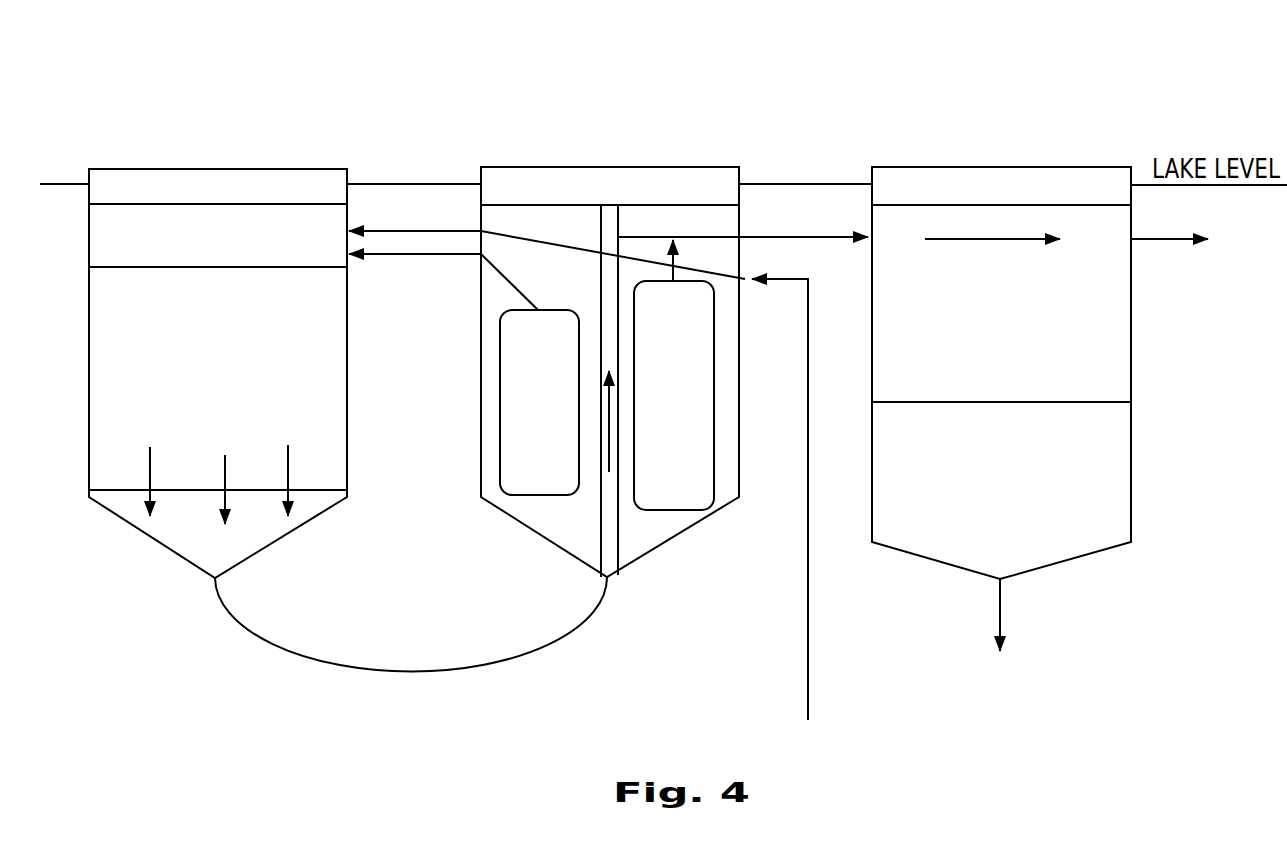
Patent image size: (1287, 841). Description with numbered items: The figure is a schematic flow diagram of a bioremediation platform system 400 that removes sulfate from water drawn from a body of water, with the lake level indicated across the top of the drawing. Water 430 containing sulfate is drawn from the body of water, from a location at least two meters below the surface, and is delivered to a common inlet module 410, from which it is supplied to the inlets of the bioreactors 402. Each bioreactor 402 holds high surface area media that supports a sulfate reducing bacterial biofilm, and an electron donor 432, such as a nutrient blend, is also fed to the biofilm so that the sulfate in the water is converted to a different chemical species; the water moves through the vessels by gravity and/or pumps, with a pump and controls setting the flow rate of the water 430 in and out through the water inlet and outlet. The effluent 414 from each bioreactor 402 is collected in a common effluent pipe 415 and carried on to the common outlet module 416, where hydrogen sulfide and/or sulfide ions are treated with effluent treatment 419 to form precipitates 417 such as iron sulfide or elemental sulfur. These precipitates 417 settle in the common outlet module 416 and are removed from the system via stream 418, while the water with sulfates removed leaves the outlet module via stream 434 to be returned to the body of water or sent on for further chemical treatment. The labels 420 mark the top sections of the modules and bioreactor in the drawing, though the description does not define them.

The bioremediation platform system 400 is at (898, 152).
The bioreactor 402 is at (238, 372).
The common inlet module 410 is at (651, 542).
The effluent 414 is at (412, 672).
The common effluent pipe 415 is at (613, 532).
The common outlet module 416 is at (1022, 305).
The precipitates 417 is at (1022, 497).
The stream 418 is at (1000, 600).
The effluent treatment 419 is at (718, 505).
The tank cover 420 is at (237, 201).
The water 430 is at (418, 229).
The electron donor 432 is at (420, 258).
The stream 434 is at (1160, 243).